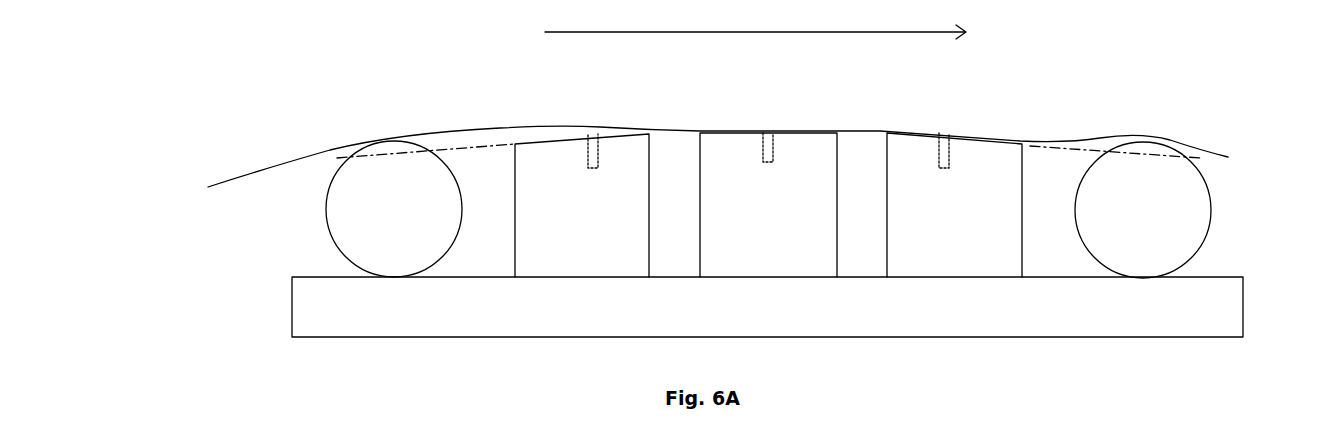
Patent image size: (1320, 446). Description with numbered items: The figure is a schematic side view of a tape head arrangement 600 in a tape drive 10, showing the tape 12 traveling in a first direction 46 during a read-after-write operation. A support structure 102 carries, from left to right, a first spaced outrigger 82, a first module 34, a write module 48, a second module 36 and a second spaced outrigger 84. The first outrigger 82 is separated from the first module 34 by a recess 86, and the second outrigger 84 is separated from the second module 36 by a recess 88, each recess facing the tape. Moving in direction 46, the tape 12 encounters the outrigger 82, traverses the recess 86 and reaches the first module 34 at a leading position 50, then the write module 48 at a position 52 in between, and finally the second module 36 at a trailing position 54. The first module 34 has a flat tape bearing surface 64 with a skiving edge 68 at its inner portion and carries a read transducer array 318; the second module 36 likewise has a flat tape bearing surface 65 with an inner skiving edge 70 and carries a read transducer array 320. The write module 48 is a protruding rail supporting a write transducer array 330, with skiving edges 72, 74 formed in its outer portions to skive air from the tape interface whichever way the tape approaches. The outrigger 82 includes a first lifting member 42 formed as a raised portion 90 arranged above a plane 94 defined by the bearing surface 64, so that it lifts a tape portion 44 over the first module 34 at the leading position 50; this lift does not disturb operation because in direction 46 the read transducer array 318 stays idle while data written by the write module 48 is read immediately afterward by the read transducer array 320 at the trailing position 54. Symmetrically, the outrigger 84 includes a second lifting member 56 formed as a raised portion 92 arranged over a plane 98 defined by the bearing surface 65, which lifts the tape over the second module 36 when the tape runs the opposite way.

The tape head arrangement 600 is at (255, 380).
The tape drive 10 is at (1040, 75).
The first direction 46 is at (610, 30).
The tape portion 44 is at (560, 115).
The support structure 102 is at (1225, 328).
The leading position 50 is at (597, 293).
The position in-between 52 is at (778, 293).
The trailing position 54 is at (968, 293).
The tape 12 is at (222, 180).
The first lifting member 42 is at (368, 146).
The recess 86 is at (410, 209).
The raised portion 90 is at (378, 148).
The plane 94 is at (445, 148).
The first spaced outrigger 82 is at (325, 228).
The plane 98 is at (1037, 147).
The first module 34 is at (582, 205).
The tape bearing surface 64 is at (567, 141).
The read transducer array 318 is at (598, 155).
The skiving edge 68 is at (650, 154).
The write module 48 is at (768, 205).
The skiving edge 72 is at (701, 170).
The write transducer array 330 is at (772, 156).
The skiving edge 74 is at (837, 226).
The skiving edge 70 is at (886, 152).
The second module 36 is at (954, 205).
The read transducer array 320 is at (938, 163).
The tape bearing surface 65 is at (958, 138).
The recess 88 is at (1121, 210).
The raised portion 92 is at (1143, 148).
The second lifting member 56 is at (1185, 152).
The second spaced outrigger 84 is at (1213, 226).